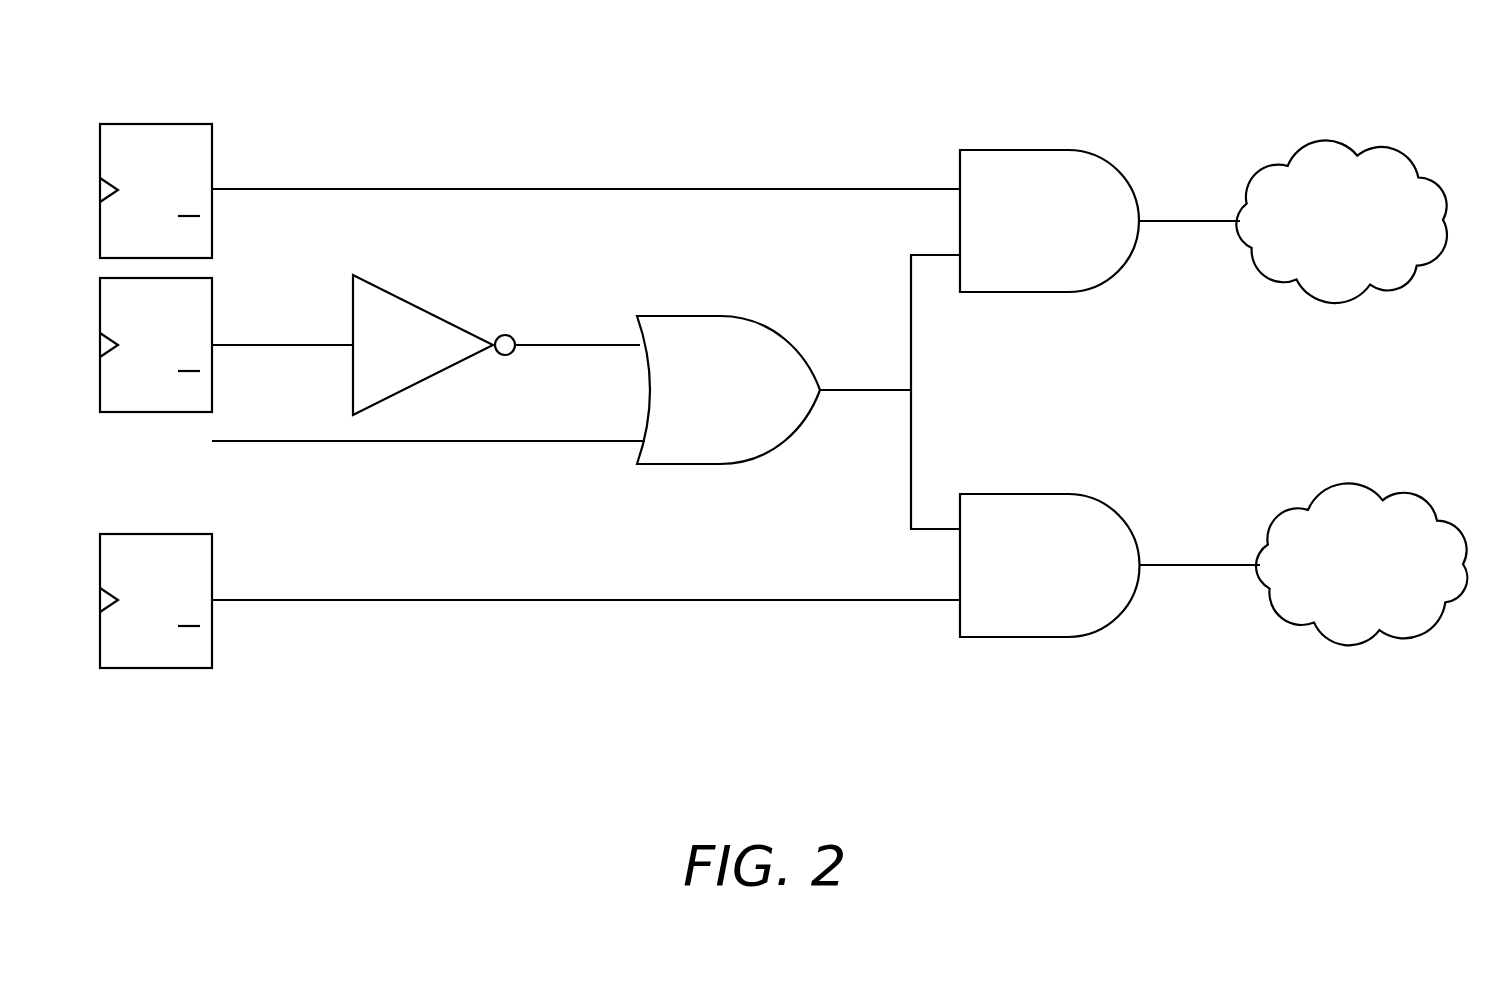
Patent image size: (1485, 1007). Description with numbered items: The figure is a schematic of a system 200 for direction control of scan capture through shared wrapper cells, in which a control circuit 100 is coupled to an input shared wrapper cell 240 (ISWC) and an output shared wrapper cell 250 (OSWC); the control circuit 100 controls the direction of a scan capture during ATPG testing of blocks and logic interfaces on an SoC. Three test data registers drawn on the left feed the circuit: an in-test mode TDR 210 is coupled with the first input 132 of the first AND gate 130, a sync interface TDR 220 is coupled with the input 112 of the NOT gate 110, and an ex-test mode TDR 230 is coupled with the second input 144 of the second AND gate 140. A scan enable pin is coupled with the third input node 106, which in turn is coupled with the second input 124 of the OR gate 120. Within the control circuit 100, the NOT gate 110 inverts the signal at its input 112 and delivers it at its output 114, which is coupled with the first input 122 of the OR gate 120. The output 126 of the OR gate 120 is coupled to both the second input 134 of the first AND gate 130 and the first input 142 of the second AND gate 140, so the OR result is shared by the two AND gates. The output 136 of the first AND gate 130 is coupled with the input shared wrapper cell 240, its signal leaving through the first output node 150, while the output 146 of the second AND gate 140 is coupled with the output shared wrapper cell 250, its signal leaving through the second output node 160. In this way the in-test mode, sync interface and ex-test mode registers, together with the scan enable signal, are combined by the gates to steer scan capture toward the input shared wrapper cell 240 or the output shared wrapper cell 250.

The system 200 is at (222, 62).
The control circuit 100 is at (652, 150).
The in-test mode TDR 210 is at (174, 201).
The sync interface TDR 220 is at (174, 356).
The ex-test mode TDR 230 is at (174, 611).
The third input node 106 is at (310, 441).
The NOT gate 110 is at (423, 356).
The input of the NOT gate 112 is at (340, 345).
The output of the NOT gate 114 is at (518, 345).
The OR gate 120 is at (750, 401).
The first input of the OR gate 122 is at (634, 348).
The second input of the OR gate 124 is at (630, 441).
The output of the OR gate 126 is at (826, 390).
The first AND gate 130 is at (1069, 232).
The first input of the first AND gate 132 is at (946, 185).
The second input of the first AND gate 134 is at (946, 255).
The output of the first AND gate 136 is at (1143, 221).
The second AND gate 140 is at (1069, 576).
The first input of the second AND gate 142 is at (946, 530).
The second input of the second AND gate 144 is at (946, 601).
The output of the second AND gate 146 is at (1143, 565).
The first output node 150 is at (1231, 223).
The second output node 160 is at (1240, 567).
The input shared wrapper cell 240 is at (1365, 247).
The output shared wrapper cell 250 is at (1383, 592).